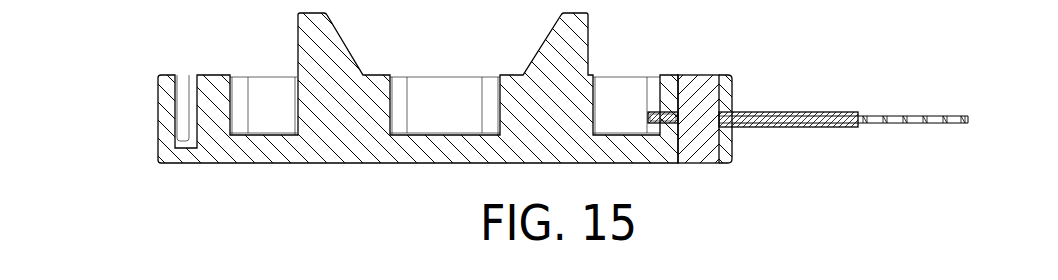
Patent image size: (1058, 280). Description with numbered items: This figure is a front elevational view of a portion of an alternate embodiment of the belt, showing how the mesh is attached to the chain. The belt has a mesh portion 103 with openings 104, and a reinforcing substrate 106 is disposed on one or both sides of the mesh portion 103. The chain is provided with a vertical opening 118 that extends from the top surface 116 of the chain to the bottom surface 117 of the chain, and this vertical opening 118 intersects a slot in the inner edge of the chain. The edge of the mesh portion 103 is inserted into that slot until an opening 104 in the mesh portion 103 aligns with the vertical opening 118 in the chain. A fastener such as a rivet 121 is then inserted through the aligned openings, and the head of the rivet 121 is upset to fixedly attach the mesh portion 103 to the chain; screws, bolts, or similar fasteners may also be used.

The mesh portion 103 is at (932, 113).
The openings 104 is at (690, 115).
The reinforcing substrate 106 is at (825, 112).
The top surface 116 is at (618, 75).
The bottom surface 117 is at (643, 163).
The vertical opening 118 is at (708, 97).
The rivet 121 is at (712, 133).